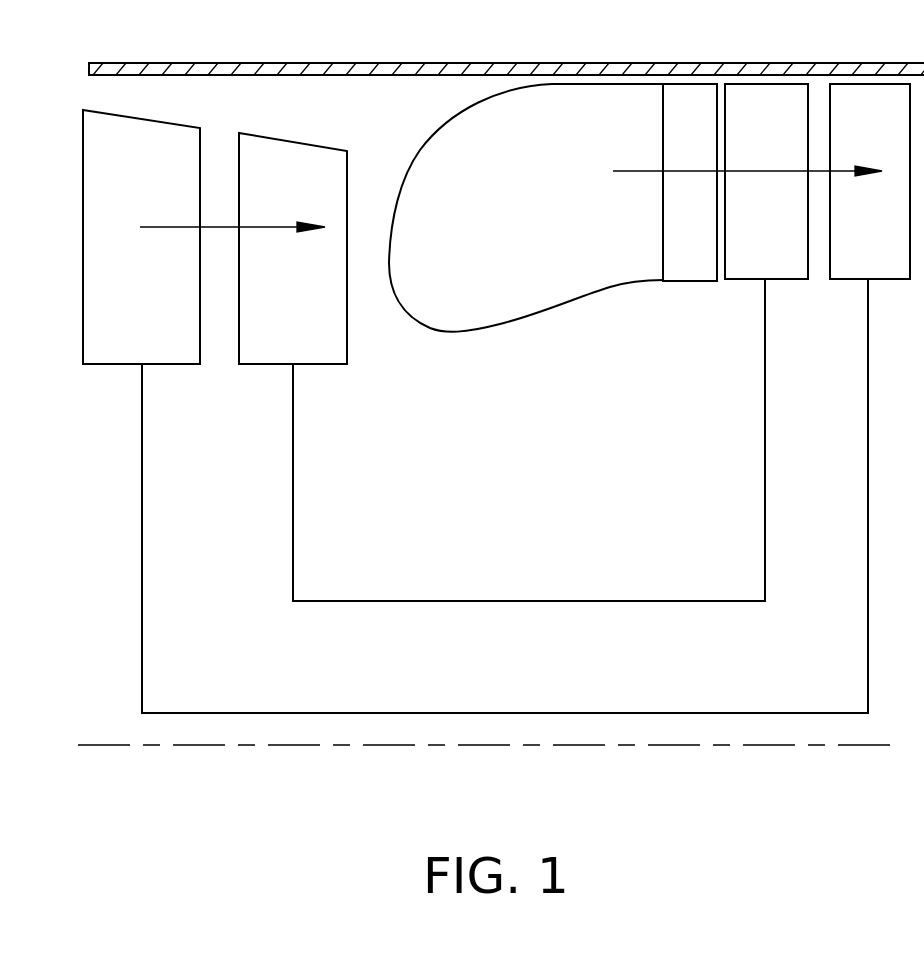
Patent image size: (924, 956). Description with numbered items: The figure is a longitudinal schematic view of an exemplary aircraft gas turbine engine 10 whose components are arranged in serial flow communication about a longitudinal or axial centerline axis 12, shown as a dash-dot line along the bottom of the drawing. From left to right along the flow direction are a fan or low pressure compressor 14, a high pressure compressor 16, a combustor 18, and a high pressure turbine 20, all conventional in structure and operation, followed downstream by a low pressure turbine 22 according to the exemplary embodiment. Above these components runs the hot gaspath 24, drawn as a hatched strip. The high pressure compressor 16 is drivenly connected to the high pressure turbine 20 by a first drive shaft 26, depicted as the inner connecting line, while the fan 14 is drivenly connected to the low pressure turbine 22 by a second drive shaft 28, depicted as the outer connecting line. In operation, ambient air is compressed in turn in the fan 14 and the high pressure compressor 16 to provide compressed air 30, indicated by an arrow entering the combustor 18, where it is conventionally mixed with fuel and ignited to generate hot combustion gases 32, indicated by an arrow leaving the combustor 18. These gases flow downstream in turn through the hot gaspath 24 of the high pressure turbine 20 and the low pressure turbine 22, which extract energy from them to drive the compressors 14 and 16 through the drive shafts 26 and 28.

The gas turbine engine 10 is at (597, 62).
The longitudinal or axial centerline axis 12 is at (737, 745).
The fan or low pressure compressor 14 is at (162, 318).
The high pressure compressor 16 is at (306, 313).
The combustor 18 is at (495, 273).
The high pressure turbine 20 is at (786, 235).
The low pressure turbine 22 is at (888, 235).
The hot gaspath 24 is at (252, 63).
The first drive shaft 26 is at (492, 601).
The second drive shaft 28 is at (528, 713).
The compressed air 30 is at (250, 227).
The hot combustion gases 32 is at (633, 171).